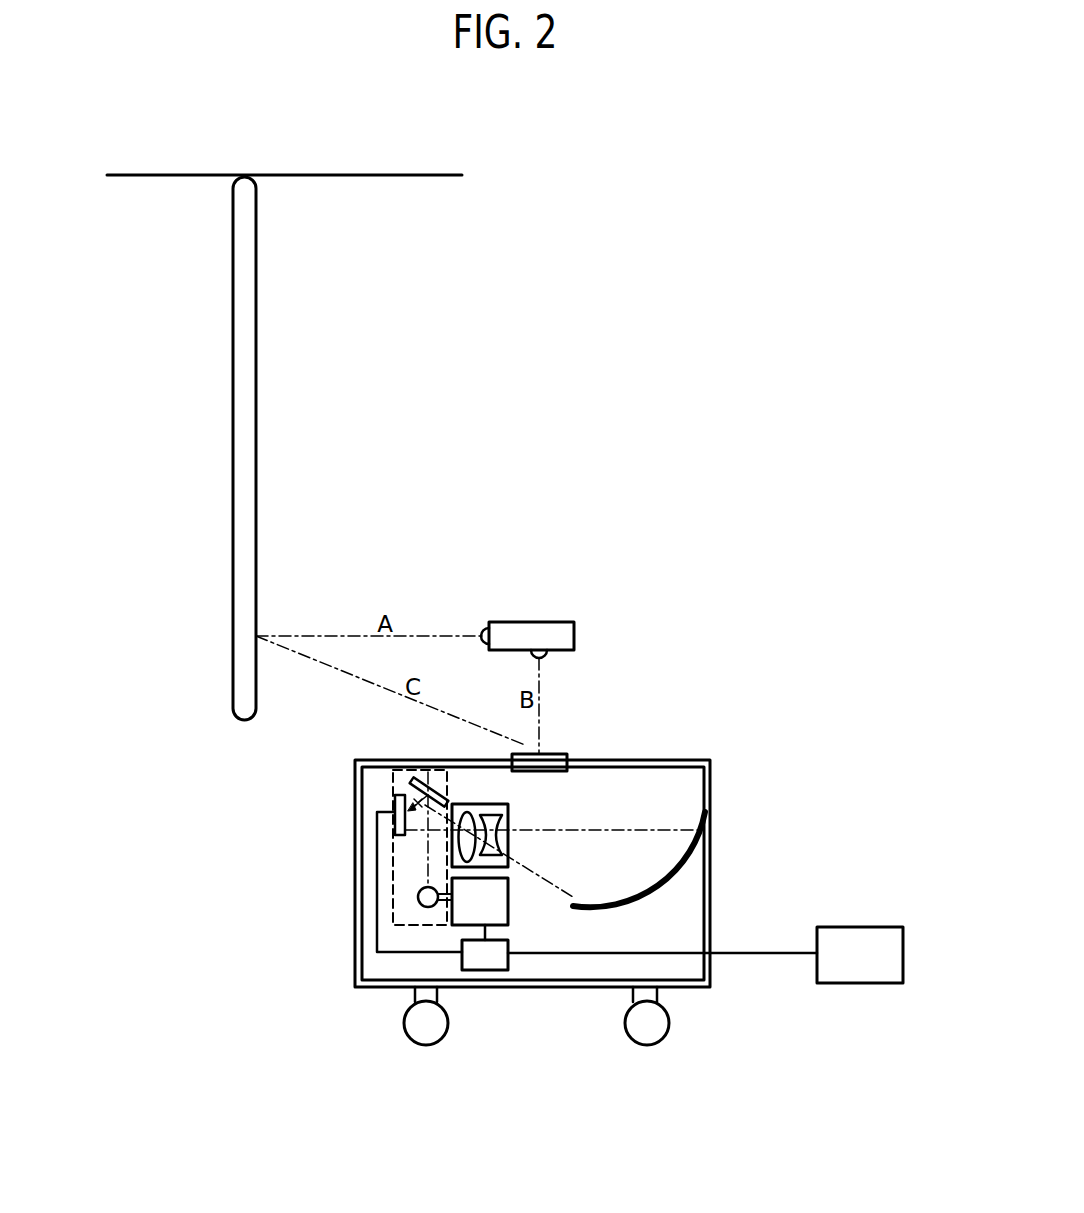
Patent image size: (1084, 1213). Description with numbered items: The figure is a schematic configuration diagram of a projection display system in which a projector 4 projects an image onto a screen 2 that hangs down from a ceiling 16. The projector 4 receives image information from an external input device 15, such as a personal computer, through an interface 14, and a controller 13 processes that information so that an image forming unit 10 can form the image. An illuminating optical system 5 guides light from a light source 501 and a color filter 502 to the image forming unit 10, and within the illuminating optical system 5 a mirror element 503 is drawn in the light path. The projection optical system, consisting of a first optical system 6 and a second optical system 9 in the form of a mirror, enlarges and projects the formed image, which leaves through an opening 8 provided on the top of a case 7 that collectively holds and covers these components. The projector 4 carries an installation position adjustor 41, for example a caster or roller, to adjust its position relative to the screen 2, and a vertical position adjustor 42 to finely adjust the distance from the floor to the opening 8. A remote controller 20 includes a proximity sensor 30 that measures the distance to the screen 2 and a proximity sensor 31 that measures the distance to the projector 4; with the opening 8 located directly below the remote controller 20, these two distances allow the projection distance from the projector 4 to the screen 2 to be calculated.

The ceiling 16 is at (327, 163).
The screen 2 is at (232, 425).
The remote controller 20 is at (544, 622).
The proximity sensor 30 is at (484, 629).
The proximity sensor 31 is at (548, 655).
The opening 8 is at (553, 754).
The case 7 is at (693, 760).
The projector 4 is at (726, 782).
The image forming unit 10 is at (401, 795).
The illuminating optical system 5 is at (407, 770).
The mirror 503 is at (415, 782).
The first optical system 6 is at (482, 805).
The second optical system (mirror) 9 is at (667, 883).
The controller 13 is at (508, 908).
The interface 14 is at (508, 960).
The external input device 15 is at (872, 927).
The color filter 502 is at (425, 907).
The light source 501 is at (419, 896).
The vertical position adjustor 42 is at (437, 995).
The installation position adjustor 41 is at (426, 1045).